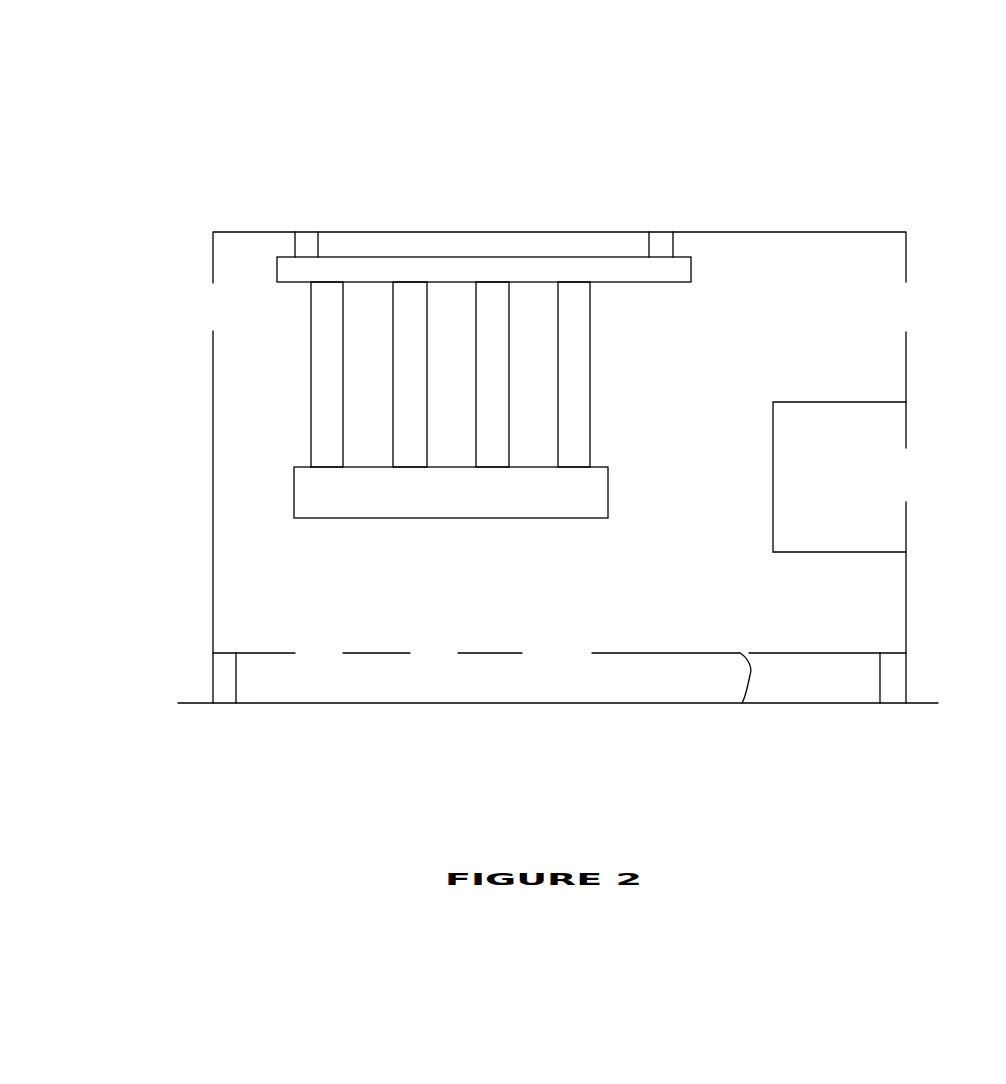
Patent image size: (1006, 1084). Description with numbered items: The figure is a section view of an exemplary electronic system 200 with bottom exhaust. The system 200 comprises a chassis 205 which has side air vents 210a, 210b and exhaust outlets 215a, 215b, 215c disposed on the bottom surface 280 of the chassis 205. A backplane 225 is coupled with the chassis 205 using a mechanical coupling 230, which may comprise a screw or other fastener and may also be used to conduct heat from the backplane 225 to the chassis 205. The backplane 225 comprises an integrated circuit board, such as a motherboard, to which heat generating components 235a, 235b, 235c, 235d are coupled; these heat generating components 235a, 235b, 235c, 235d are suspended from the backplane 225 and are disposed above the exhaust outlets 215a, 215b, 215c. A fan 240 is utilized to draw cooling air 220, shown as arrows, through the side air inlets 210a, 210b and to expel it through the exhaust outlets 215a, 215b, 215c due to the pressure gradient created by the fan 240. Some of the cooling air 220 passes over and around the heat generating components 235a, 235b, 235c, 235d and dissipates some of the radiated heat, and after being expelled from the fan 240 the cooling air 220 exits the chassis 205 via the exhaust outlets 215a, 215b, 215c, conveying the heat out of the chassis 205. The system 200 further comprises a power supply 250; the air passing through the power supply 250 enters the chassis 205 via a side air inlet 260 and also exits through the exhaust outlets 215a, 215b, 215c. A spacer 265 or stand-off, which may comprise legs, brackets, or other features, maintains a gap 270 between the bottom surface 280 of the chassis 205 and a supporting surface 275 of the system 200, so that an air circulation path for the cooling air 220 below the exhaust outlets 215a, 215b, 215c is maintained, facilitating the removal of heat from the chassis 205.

The electronic system 200 is at (45, 137).
The chassis 205 is at (822, 232).
The side air vent 210a is at (204, 289).
The side air vent 210b is at (906, 299).
The exhaust outlet 215a is at (318, 635).
The exhaust outlet 215b is at (435, 655).
The exhaust outlet 215c is at (557, 652).
The cooling air 220 is at (253, 323).
The backplane 225 is at (675, 273).
The mechanical coupling 230 is at (303, 240).
The heat generating component 235a is at (327, 350).
The heat generating component 235b is at (410, 350).
The heat generating component 235c is at (492, 350).
The heat generating component 235d is at (583, 350).
The fan 240 is at (598, 500).
The power supply 250 is at (813, 552).
The side air inlet 260 is at (905, 477).
The spacer 265 is at (220, 675).
The gap 270 is at (750, 675).
The supporting surface 275 is at (611, 703).
The bottom surface 280 is at (650, 655).